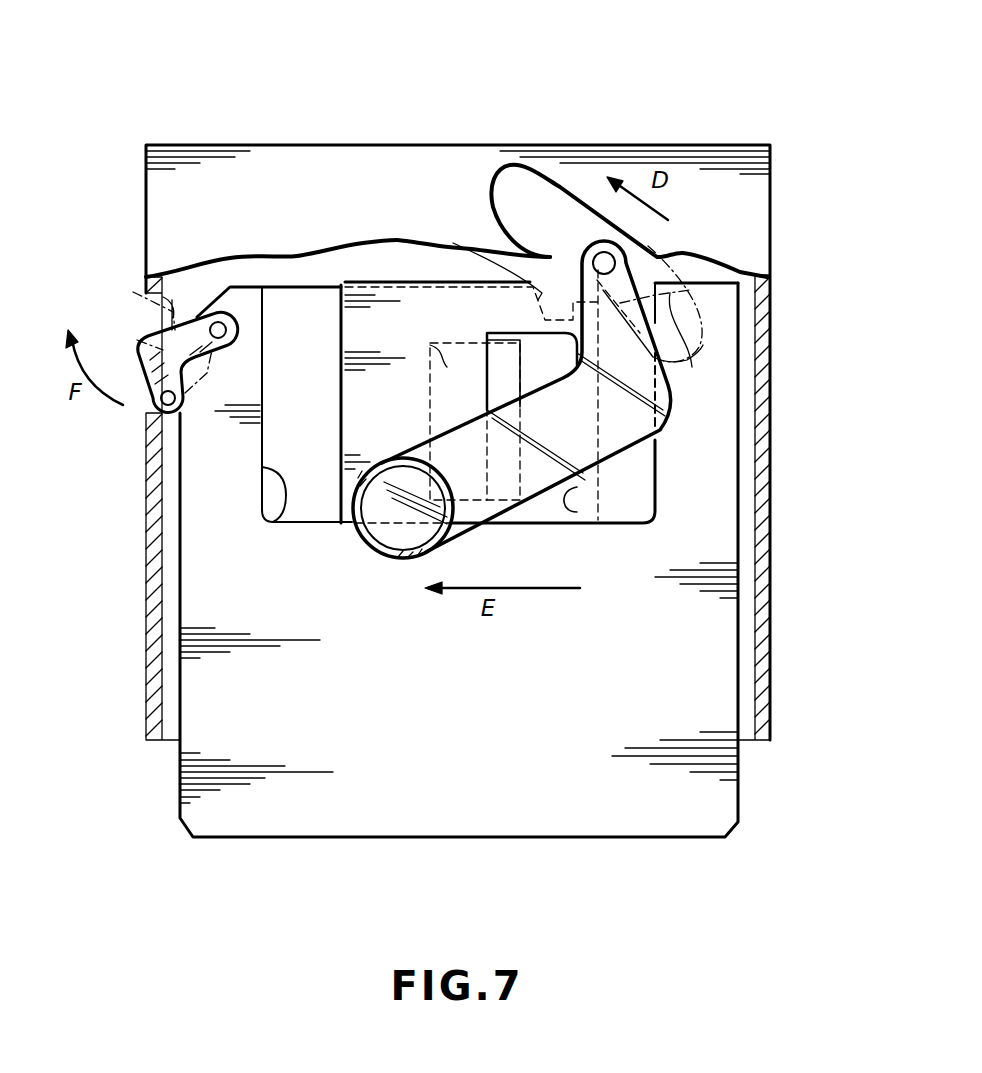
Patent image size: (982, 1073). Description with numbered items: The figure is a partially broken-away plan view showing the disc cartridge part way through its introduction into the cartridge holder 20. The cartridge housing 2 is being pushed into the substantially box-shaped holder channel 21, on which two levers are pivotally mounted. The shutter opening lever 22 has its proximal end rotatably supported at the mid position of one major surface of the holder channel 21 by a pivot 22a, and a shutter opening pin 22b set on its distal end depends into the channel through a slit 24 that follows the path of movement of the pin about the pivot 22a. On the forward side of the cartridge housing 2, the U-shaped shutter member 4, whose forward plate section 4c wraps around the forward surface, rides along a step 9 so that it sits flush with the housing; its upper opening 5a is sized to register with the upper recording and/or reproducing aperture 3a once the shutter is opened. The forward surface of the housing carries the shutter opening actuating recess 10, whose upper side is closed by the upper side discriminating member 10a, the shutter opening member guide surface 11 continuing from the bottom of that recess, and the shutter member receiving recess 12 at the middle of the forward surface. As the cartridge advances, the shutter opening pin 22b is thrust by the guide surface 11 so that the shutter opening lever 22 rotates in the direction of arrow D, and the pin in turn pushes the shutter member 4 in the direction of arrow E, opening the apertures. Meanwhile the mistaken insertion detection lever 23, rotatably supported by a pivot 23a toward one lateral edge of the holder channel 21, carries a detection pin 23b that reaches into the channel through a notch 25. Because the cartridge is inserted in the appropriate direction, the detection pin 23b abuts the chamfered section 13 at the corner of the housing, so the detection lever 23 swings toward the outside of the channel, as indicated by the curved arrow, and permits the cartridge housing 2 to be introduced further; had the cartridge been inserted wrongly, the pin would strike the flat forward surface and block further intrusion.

The cartridge housing 2 is at (708, 783).
The upper recording and/or reproducing aperture 3a is at (430, 343).
The shutter member 4 is at (343, 408).
The forward plate section 4c is at (418, 282).
The upper opening 5a is at (572, 503).
The step 9 is at (282, 497).
The shutter opening actuating recess 10 is at (683, 288).
The upper side discriminating member 10a is at (692, 367).
The shutter opening member guide surface 11 is at (650, 245).
The shutter member receiving recess 12 is at (530, 258).
The chamfered section 13 is at (220, 322).
The cartridge holder 20 is at (740, 128).
The holder channel 21 is at (750, 185).
The shutter opening lever 22 is at (470, 433).
The pivot 22a is at (395, 503).
The shutter opening pin 22b is at (600, 262).
The mistaken insertion detection lever 23 is at (147, 340).
The pivot 23a is at (212, 313).
The detection pin 23b is at (180, 425).
The slit 24 is at (547, 182).
The notch 25 is at (160, 312).